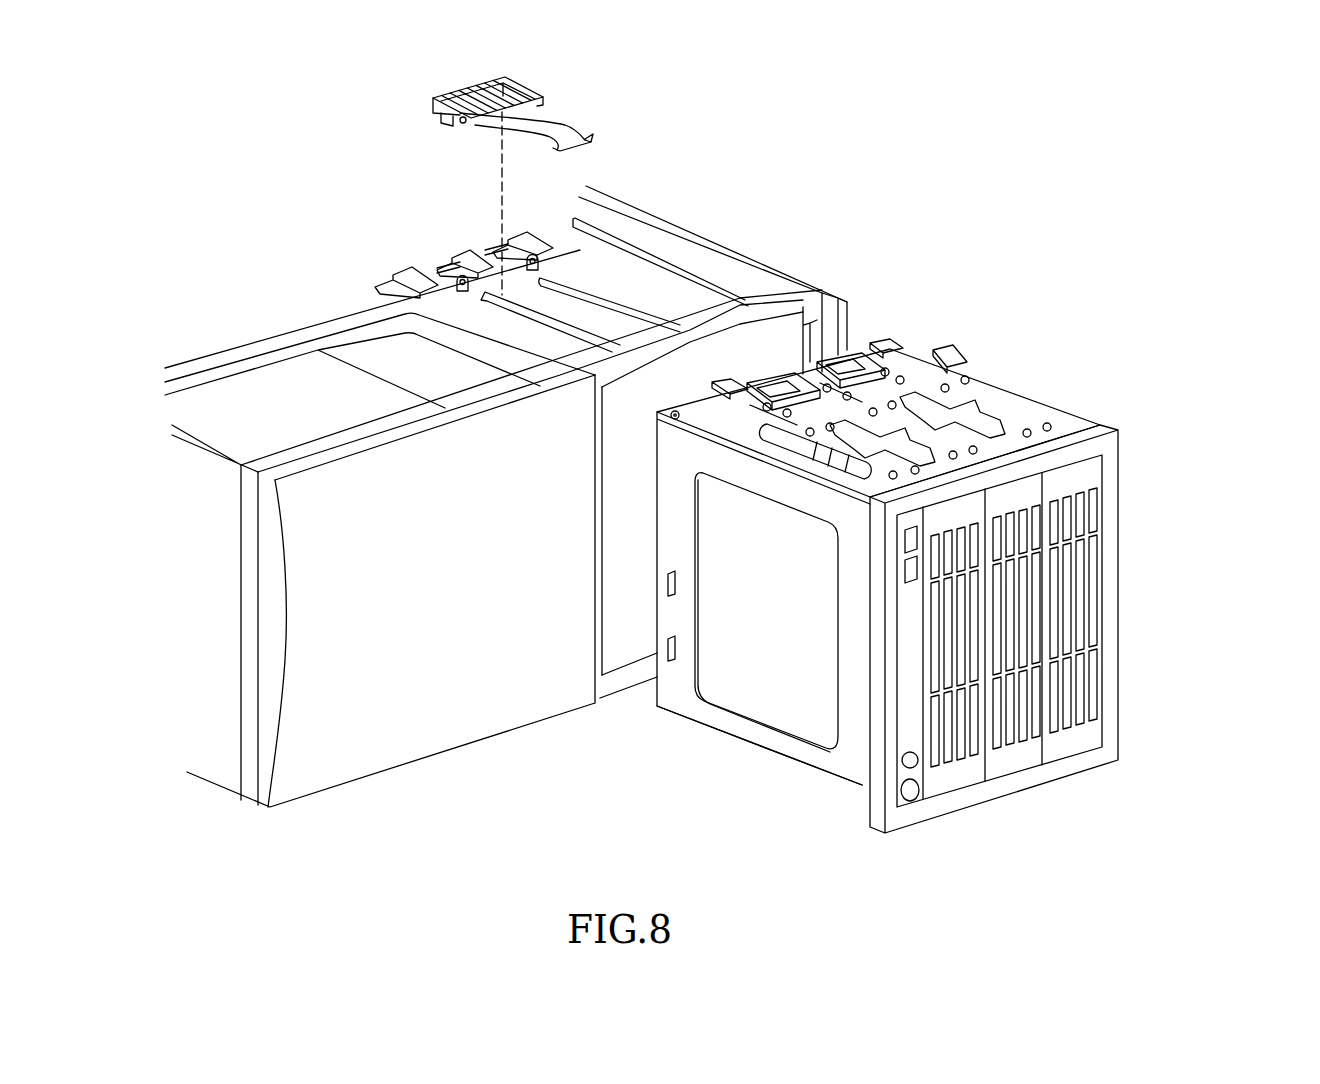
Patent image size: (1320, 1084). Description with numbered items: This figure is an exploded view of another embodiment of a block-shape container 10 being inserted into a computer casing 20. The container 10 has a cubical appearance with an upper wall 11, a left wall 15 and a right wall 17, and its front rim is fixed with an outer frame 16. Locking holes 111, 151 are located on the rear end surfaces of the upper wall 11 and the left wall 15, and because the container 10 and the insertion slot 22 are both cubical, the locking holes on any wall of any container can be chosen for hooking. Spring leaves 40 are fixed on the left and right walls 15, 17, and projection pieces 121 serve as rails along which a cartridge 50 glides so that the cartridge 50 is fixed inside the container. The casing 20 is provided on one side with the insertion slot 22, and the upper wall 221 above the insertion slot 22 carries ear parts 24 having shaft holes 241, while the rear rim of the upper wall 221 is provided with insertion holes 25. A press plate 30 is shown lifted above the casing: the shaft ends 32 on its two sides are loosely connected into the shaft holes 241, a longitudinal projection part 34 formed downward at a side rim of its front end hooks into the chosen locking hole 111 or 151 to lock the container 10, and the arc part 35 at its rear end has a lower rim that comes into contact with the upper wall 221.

The block-shape container 10 is at (1033, 308).
The upper wall 11 is at (740, 697).
The locking hole 111 is at (770, 370).
The projection piece 121 is at (955, 412).
The left wall 15 is at (842, 776).
The locking hole 151 is at (668, 653).
The outer frame 16 is at (1110, 510).
The right wall 17 is at (1013, 410).
The computer casing 20 is at (762, 252).
The insertion slot 22 is at (790, 352).
The upper wall 221 is at (655, 272).
The ear part 24 is at (405, 272).
The shaft hole 241 is at (540, 256).
The insertion hole 25 is at (490, 263).
The press plate 30 is at (546, 104).
The shaft end 32 is at (462, 123).
The longitudinal projection part 34 is at (440, 116).
The arc part 35 is at (575, 131).
The spring leaf 40 is at (880, 372).
The cartridge 50 is at (1065, 743).